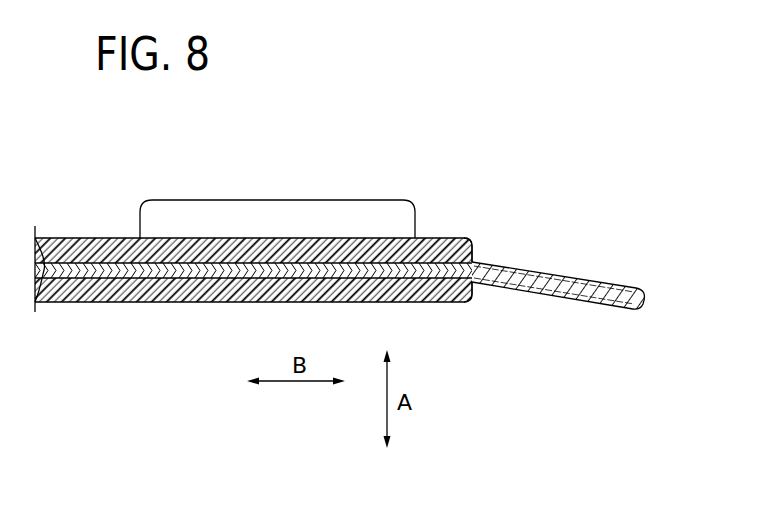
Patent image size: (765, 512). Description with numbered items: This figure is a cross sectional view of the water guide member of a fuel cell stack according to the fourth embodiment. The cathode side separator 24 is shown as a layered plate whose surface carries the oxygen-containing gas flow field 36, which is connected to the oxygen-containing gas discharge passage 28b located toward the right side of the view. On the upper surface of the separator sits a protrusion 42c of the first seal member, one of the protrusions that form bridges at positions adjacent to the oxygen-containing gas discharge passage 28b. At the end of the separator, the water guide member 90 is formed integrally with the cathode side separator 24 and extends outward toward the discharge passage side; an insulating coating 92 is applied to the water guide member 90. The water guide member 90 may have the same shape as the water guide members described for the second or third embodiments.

The cathode side separator 24 is at (500, 134).
The oxygen-containing gas flow field 36 is at (92, 232).
The protrusion 42c is at (301, 214).
The water guide member 90 is at (528, 234).
The insulating coating 92 is at (622, 312).
The oxygen-containing gas discharge passage 28b is at (703, 302).